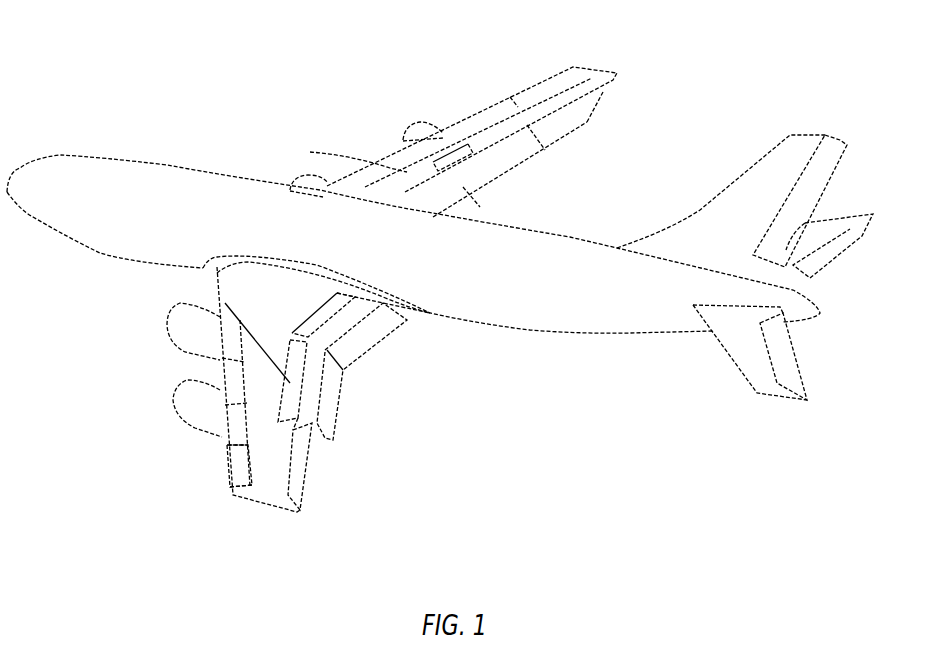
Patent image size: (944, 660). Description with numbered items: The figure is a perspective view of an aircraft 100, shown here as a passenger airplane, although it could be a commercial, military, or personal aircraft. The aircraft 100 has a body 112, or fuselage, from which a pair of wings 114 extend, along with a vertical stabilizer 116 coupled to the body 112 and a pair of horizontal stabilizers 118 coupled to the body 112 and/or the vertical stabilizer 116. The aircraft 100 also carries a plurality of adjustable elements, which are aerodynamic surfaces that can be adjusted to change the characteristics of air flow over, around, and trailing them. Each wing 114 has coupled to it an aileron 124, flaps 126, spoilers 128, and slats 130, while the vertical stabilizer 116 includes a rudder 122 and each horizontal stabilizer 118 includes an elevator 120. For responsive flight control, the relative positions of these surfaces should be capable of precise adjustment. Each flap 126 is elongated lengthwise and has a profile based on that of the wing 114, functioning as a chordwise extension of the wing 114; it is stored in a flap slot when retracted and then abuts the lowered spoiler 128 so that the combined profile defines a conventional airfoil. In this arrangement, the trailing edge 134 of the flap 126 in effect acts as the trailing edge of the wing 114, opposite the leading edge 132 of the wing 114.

The aircraft 100 is at (690, 78).
The body 112 is at (95, 228).
The wings 114 is at (462, 133).
The vertical stabilizer 116 is at (756, 166).
The horizontal stabilizers 118 is at (834, 213).
The elevator 120 is at (782, 346).
The rudder 122 is at (840, 139).
The aileron 124 is at (558, 103).
The flaps 126 is at (477, 210).
The spoilers 128 is at (467, 150).
The slats 130 is at (527, 92).
The leading edge 132 is at (213, 365).
The trailing edge 134 is at (338, 402).